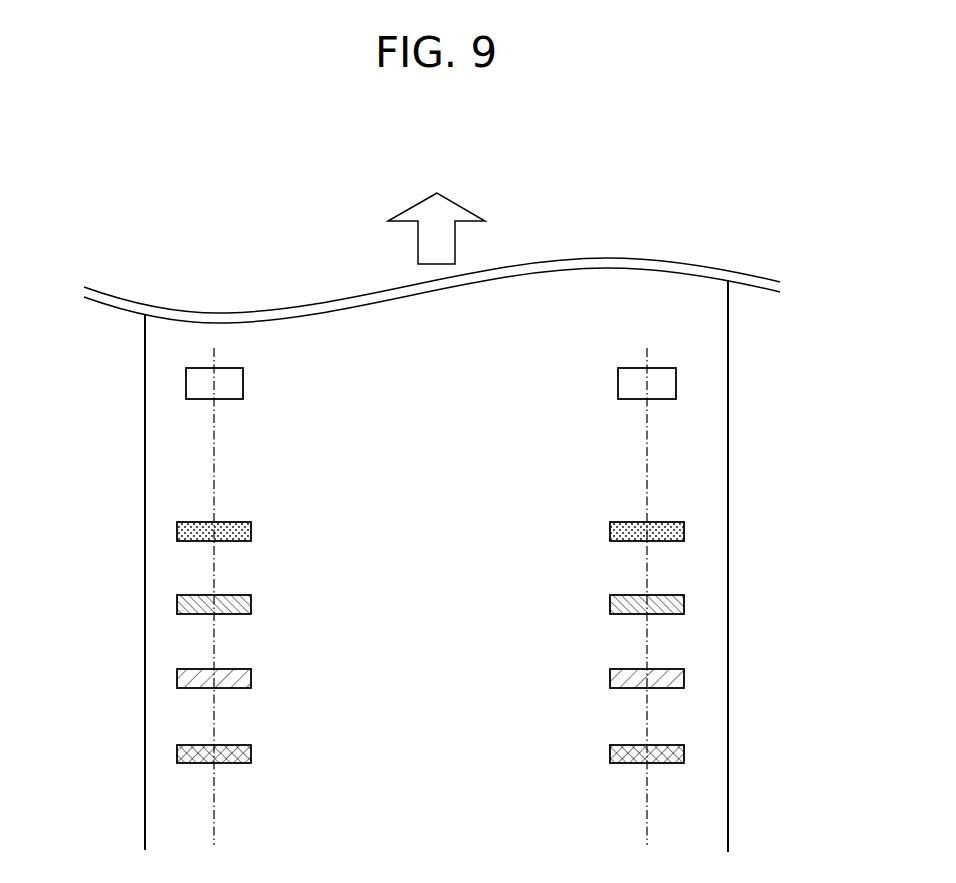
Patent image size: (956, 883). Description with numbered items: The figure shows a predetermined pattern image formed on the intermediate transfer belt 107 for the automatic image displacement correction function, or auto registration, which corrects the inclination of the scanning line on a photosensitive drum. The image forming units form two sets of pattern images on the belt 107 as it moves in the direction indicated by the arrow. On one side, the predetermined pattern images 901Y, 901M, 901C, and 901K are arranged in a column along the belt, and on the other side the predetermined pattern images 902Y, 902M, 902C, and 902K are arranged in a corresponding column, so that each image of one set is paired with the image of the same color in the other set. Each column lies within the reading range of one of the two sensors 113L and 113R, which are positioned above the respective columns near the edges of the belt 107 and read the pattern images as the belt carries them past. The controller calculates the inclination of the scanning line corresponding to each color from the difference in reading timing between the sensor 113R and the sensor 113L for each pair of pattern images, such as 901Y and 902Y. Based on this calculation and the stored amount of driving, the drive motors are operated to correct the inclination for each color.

The intermediate transfer belt 107 is at (710, 819).
The sensor 113L is at (186, 384).
The sensor 113R is at (676, 385).
The predetermined pattern image 901Y is at (177, 533).
The predetermined pattern image 901M is at (177, 606).
The predetermined pattern image 901C is at (177, 680).
The left black patch image 901K is at (177, 755).
The predetermined pattern image 902Y is at (684, 534).
The predetermined pattern image 902M is at (684, 607).
The predetermined pattern image 902C is at (684, 681).
The right black patch image 902K is at (684, 756).